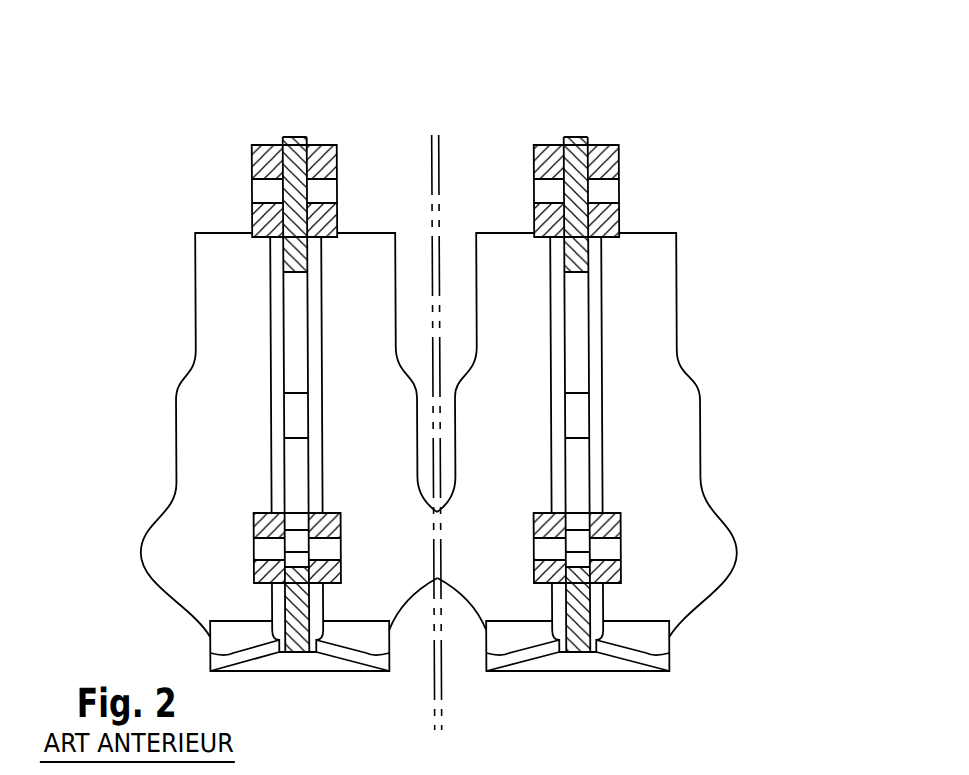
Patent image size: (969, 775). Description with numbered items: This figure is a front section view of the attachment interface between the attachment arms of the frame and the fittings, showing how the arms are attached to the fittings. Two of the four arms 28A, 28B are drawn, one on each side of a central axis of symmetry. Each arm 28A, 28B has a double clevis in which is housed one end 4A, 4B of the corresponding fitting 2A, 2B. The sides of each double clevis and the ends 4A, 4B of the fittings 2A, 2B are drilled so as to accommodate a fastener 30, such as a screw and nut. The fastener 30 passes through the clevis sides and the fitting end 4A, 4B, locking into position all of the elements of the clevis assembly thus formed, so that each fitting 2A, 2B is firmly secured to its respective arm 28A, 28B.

The fitting 2A is at (215, 422).
The fitting 2B is at (652, 432).
The end of fitting 4A is at (297, 136).
The end of fitting 4B is at (575, 136).
The attachment arm 28A is at (253, 169).
The attachment arm 28B is at (620, 158).
The fastener 30 is at (253, 550).